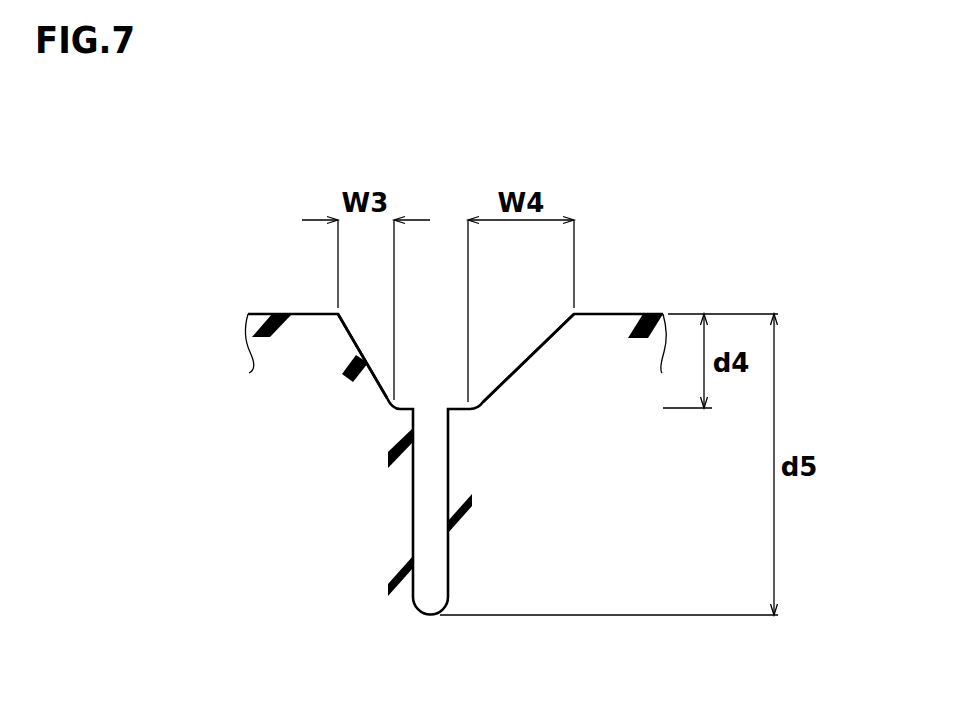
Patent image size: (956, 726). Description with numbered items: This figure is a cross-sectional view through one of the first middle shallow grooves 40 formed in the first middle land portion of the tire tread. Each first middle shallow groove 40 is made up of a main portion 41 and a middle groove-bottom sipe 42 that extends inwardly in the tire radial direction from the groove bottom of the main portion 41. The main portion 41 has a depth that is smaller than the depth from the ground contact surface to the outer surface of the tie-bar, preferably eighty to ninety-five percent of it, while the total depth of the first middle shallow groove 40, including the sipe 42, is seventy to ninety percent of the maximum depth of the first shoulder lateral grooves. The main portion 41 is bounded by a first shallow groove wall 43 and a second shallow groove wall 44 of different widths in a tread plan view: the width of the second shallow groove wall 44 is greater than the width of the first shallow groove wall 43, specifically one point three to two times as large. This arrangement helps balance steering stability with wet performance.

The first middle shallow groove 40 is at (446, 464).
The main portion 41 is at (422, 380).
The middle groove-bottom sipe 42 is at (432, 503).
The first shallow groove wall 43 is at (363, 357).
The second shallow groove wall 44 is at (526, 357).